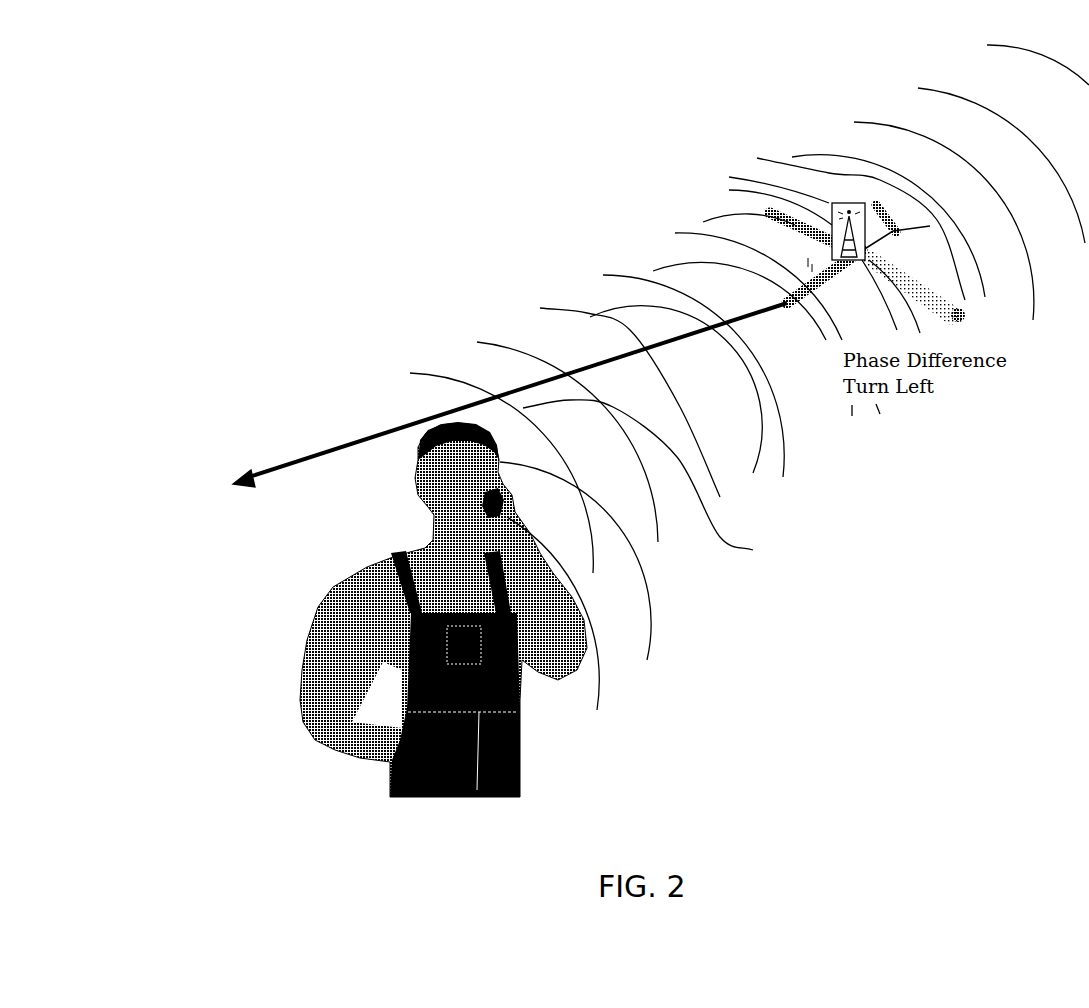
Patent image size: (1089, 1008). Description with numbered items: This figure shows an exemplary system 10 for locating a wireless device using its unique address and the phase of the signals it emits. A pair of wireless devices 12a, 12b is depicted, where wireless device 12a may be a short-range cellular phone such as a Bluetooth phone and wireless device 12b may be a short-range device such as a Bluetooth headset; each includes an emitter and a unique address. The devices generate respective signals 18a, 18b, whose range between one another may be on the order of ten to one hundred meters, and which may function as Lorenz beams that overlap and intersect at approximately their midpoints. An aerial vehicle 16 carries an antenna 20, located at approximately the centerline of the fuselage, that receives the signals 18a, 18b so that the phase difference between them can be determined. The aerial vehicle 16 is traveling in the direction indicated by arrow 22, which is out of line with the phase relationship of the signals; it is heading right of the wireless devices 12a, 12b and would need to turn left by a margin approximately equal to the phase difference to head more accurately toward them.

The system 10 is at (551, 252).
The wireless device 12a is at (392, 783).
The wireless device 12b is at (485, 511).
The aerial vehicle 16 is at (957, 313).
The signal 18a is at (633, 573).
The signal 18b is at (445, 377).
The antenna 20 is at (832, 210).
The arrow 22 is at (362, 438).